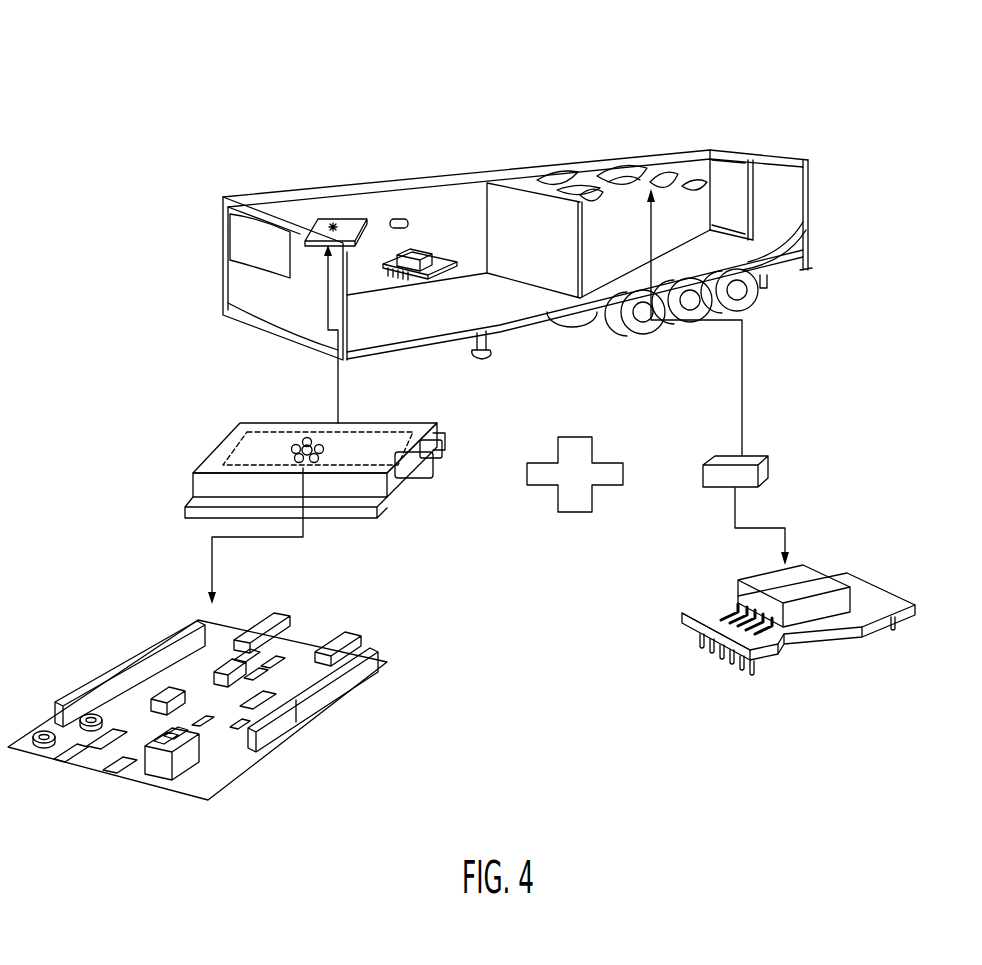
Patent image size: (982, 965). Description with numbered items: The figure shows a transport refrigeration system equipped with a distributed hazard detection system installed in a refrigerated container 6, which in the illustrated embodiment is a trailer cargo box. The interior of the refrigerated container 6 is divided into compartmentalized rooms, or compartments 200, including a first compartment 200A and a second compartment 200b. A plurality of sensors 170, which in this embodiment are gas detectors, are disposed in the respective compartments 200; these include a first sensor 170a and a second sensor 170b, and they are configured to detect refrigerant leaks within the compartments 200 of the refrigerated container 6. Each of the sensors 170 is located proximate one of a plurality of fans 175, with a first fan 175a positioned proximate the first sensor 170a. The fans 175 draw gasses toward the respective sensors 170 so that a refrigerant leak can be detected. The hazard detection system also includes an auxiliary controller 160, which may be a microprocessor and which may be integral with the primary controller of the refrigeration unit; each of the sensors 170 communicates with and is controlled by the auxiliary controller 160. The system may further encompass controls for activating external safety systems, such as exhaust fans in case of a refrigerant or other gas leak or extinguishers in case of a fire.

The refrigerated container 6 is at (363, 177).
The compartmentalized rooms 200 is at (640, 116).
The first compartment 200A is at (740, 175).
The second compartment 200b is at (335, 208).
The fans 175 is at (620, 154).
The first fan 175a is at (645, 188).
The sensors 170 is at (660, 662).
The first sensor 170a is at (767, 668).
The second sensor 170b is at (418, 250).
The auxiliary controller 160 is at (137, 773).